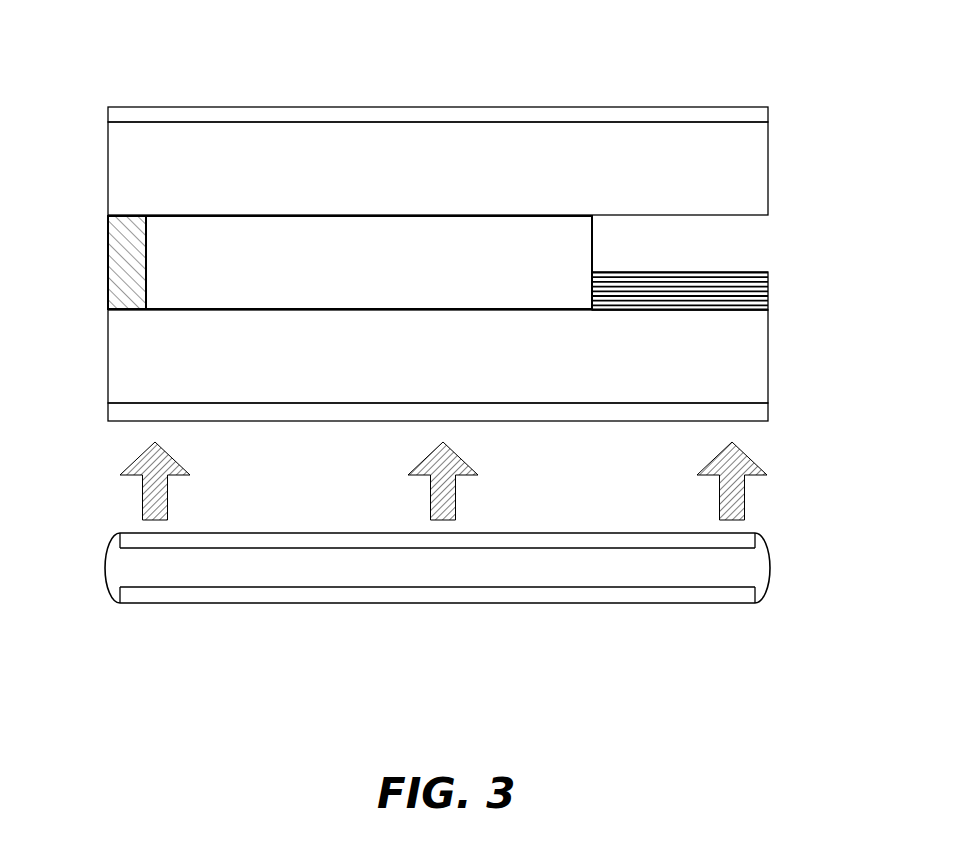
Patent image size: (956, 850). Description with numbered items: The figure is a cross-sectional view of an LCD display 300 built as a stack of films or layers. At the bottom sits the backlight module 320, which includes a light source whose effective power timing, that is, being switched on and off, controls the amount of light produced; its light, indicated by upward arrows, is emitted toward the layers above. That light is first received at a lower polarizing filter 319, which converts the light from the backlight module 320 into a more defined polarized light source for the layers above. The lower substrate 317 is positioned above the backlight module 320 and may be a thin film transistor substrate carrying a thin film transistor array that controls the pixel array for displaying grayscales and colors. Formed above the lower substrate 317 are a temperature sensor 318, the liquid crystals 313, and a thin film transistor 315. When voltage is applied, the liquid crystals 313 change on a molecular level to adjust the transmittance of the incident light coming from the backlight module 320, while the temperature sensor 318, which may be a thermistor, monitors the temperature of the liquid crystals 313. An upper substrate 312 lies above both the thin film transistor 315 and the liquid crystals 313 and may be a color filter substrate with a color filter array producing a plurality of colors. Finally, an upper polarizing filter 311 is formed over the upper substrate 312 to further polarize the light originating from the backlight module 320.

The display 300 is at (214, 46).
The upper polarizing filter 311 is at (768, 113).
The upper substrate 312 is at (768, 170).
The liquid crystals 313 is at (146, 255).
The thin film transistor 315 is at (768, 290).
The lower substrate 317 is at (768, 368).
The temperature sensor 318 is at (108, 285).
The lower polarizing filter 319 is at (768, 410).
The backlight module 320 is at (543, 603).